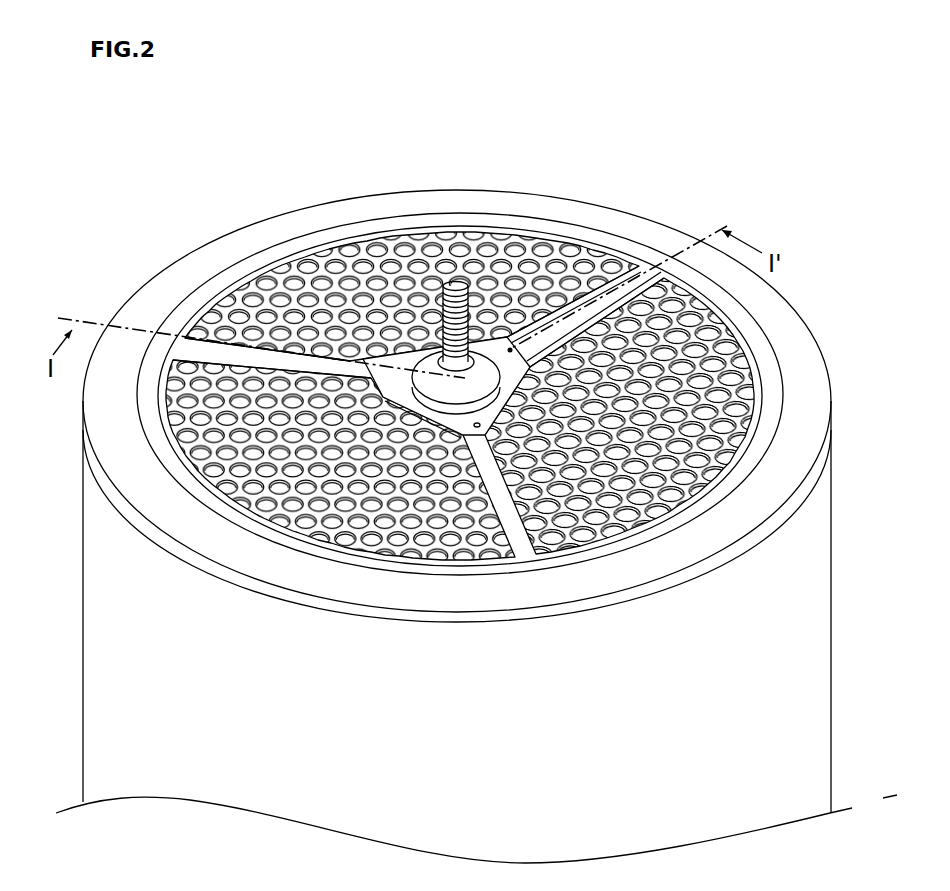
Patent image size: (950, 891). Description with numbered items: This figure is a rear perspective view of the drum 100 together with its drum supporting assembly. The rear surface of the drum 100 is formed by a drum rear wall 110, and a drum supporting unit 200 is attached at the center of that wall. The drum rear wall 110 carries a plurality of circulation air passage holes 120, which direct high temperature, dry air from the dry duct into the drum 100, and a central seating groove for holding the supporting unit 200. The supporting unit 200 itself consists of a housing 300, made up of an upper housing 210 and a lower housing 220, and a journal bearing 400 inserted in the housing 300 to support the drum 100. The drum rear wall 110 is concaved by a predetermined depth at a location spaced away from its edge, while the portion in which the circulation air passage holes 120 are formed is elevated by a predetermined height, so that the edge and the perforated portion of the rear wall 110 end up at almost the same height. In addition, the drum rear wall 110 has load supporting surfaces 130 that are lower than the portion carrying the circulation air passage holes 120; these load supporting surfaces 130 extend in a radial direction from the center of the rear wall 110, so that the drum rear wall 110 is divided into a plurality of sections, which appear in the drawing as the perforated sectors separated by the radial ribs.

The drum 100 is at (559, 170).
The drum rear wall 110 is at (767, 378).
The circulation air passage holes 120 is at (395, 231).
The load supporting surfaces 130 is at (217, 355).
The drum supporting unit 200 is at (308, 250).
The upper housing 210 is at (562, 365).
The lower housing 220 is at (594, 305).
The housing 300 is at (533, 285).
The journal bearing 400 is at (453, 285).